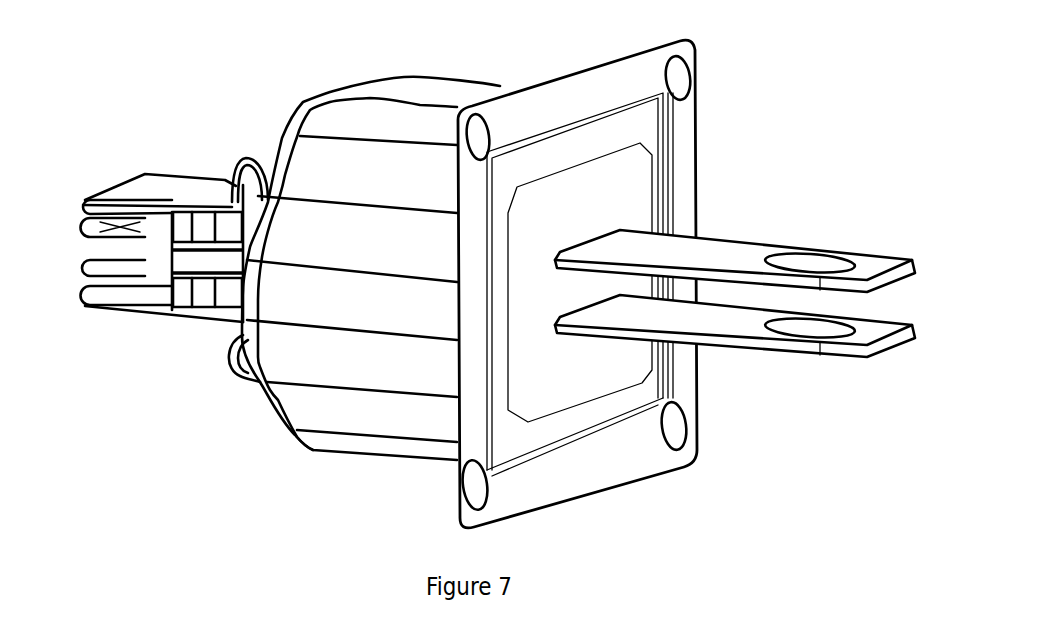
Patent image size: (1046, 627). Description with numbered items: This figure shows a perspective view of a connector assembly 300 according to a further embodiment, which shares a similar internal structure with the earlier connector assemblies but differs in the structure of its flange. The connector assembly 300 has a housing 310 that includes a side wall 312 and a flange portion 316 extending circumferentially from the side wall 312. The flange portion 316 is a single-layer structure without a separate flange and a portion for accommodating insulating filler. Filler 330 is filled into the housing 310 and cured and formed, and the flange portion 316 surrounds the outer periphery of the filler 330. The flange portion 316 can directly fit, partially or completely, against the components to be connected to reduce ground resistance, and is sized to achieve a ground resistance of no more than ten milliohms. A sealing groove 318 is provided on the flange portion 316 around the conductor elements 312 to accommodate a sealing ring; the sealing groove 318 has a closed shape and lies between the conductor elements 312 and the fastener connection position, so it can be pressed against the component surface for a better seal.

The connector assembly 300 is at (498, 277).
The housing 310 is at (279, 117).
The side wall 312 is at (412, 138).
The flange portion 316 is at (523, 92).
The sealing groove 318 is at (478, 230).
The filler 330 is at (647, 192).